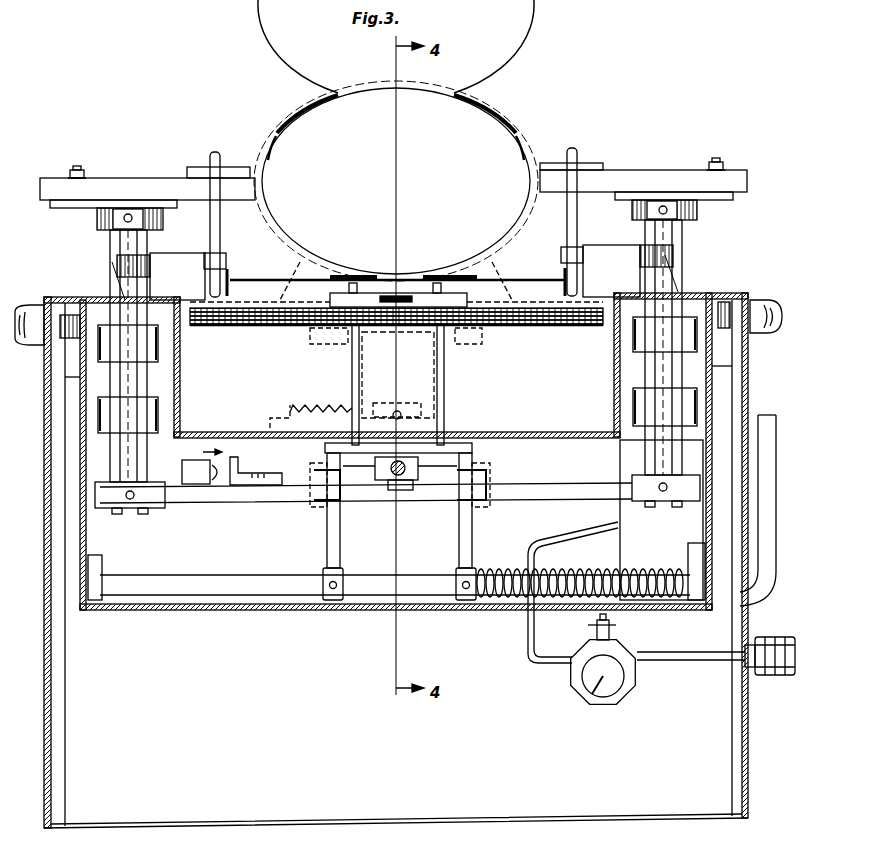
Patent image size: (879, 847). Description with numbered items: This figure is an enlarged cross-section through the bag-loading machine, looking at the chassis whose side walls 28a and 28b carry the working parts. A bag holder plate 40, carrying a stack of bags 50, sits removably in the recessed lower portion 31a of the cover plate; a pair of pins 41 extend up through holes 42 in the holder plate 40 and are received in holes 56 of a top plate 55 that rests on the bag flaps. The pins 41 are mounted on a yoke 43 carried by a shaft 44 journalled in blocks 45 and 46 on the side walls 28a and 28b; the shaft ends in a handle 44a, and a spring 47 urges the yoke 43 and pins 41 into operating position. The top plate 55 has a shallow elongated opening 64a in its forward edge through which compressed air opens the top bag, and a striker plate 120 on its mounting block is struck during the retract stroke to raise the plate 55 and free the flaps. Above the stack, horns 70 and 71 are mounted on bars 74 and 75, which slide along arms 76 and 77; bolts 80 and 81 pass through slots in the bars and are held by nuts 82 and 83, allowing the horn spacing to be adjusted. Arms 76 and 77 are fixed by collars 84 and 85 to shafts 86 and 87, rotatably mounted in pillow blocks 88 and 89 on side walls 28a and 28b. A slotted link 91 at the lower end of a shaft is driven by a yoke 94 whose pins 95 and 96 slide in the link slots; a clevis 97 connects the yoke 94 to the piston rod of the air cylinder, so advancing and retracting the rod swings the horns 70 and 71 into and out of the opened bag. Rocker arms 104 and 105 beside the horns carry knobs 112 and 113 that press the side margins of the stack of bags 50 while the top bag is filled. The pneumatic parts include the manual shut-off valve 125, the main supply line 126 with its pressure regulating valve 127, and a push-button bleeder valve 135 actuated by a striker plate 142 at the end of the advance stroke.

The chassis side wall 28a is at (86, 540).
The chassis side wall 28b is at (738, 380).
The recessed lower portion 31a is at (543, 430).
The bag holder plate 40 is at (518, 326).
The pins 41 is at (438, 377).
The holes 42 is at (405, 333).
The yoke 43 is at (460, 527).
The shaft 44 is at (236, 578).
The handle 44a is at (767, 428).
The block 45 is at (102, 572).
The block 46 is at (700, 543).
The spring 47 is at (637, 572).
The stack of bags 50 is at (447, 86).
The top plate 55 is at (421, 280).
The holes 56 is at (355, 274).
The shallow elongated opening 64a is at (401, 292).
The horn 70 is at (298, 100).
The horn 71 is at (500, 110).
The bar 74 is at (145, 185).
The bar 75 is at (653, 175).
The arm 76 is at (94, 203).
The arm 77 is at (631, 195).
The bolt 80 is at (77, 168).
The bolt 81 is at (715, 160).
The nut 82 is at (66, 172).
The nut 83 is at (726, 167).
The collar 84 is at (98, 218).
The collar 85 is at (700, 212).
The shaft 86 is at (118, 243).
The shaft 87 is at (682, 237).
The pillow blocks 88 is at (160, 397).
The pillow blocks 89 is at (632, 400).
The link 91 is at (552, 486).
The yoke 94 is at (460, 466).
The pin 95 is at (312, 493).
The pin 96 is at (490, 497).
The clevis 97 is at (407, 490).
The rocker arm 104 is at (215, 222).
The rocker arm 105 is at (577, 212).
The knob 112 is at (229, 290).
The knob 113 is at (567, 290).
The striker plate 120 is at (362, 386).
The manual shut-off valve 125 is at (775, 676).
The main supply line 126 is at (547, 660).
The pressure regulating valve 127 is at (606, 700).
The bleeder valve 135 is at (200, 486).
The striker plate 142 is at (242, 470).